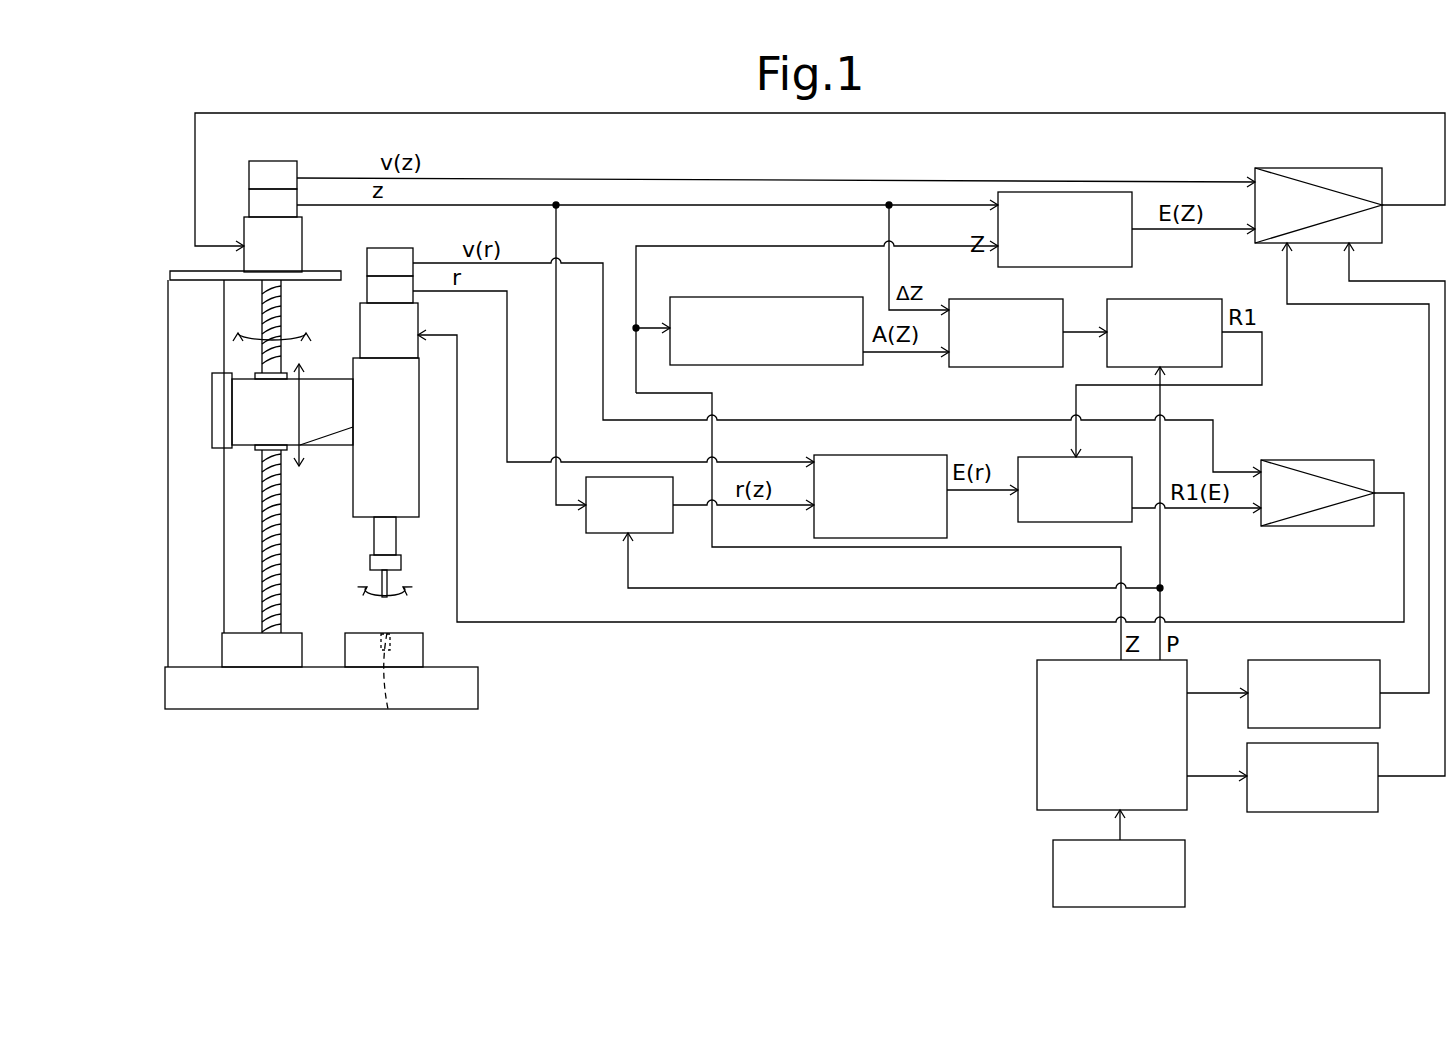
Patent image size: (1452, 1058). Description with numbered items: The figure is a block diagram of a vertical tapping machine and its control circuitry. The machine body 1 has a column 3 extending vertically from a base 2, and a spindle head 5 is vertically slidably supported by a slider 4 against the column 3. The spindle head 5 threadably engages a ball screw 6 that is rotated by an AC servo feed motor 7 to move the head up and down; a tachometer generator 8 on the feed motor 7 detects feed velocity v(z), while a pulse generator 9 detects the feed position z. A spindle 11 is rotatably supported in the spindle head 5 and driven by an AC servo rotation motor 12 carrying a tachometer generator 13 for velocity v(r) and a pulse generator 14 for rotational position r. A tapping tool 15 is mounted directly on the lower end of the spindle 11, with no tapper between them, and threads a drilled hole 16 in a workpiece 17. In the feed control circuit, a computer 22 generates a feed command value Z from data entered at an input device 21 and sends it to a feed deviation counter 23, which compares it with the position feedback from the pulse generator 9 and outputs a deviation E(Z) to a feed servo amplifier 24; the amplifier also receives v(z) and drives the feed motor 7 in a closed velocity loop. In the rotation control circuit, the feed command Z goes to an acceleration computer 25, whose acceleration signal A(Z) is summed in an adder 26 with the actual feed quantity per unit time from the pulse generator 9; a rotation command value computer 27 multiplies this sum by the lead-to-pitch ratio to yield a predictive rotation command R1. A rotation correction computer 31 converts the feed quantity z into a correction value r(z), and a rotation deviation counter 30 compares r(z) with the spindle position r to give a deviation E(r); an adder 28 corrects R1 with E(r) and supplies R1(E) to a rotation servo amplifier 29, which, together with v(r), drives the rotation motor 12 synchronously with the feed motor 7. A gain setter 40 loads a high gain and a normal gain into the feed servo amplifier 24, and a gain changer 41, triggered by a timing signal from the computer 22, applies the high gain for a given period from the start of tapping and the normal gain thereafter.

The machine body 1 is at (163, 273).
The base 2 is at (276, 690).
The column 3 is at (180, 667).
The slider 4 is at (212, 404).
The spindle head 5 is at (353, 478).
The ball screw 6 is at (262, 495).
The feed motor 7 is at (302, 246).
The tachometer generator 8 is at (297, 163).
The pulse generator 9 is at (249, 202).
The spindle 11 is at (374, 533).
The rotation motor 12 is at (360, 338).
The tachometer generator 13 is at (390, 248).
The pulse generator 14 is at (367, 292).
The tapping tool 15 is at (385, 582).
The drilled hole 16 is at (395, 690).
The workpiece 17 is at (417, 650).
The input device 21 is at (1053, 857).
The computer 22 is at (1037, 700).
The feed deviation counter 23 is at (998, 196).
The feed servo amplifier 24 is at (1310, 176).
The acceleration computer 25 is at (810, 365).
The adder 26 is at (1000, 367).
The rotation command value computer 27 is at (1222, 305).
The adder 28 is at (1100, 457).
The rotation servo amplifier 29 is at (1320, 526).
The rotation deviation counter 30 is at (897, 455).
The rotation correction computer 31 is at (600, 534).
The gain setter 40 is at (1357, 805).
The gain changer 41 is at (1380, 668).